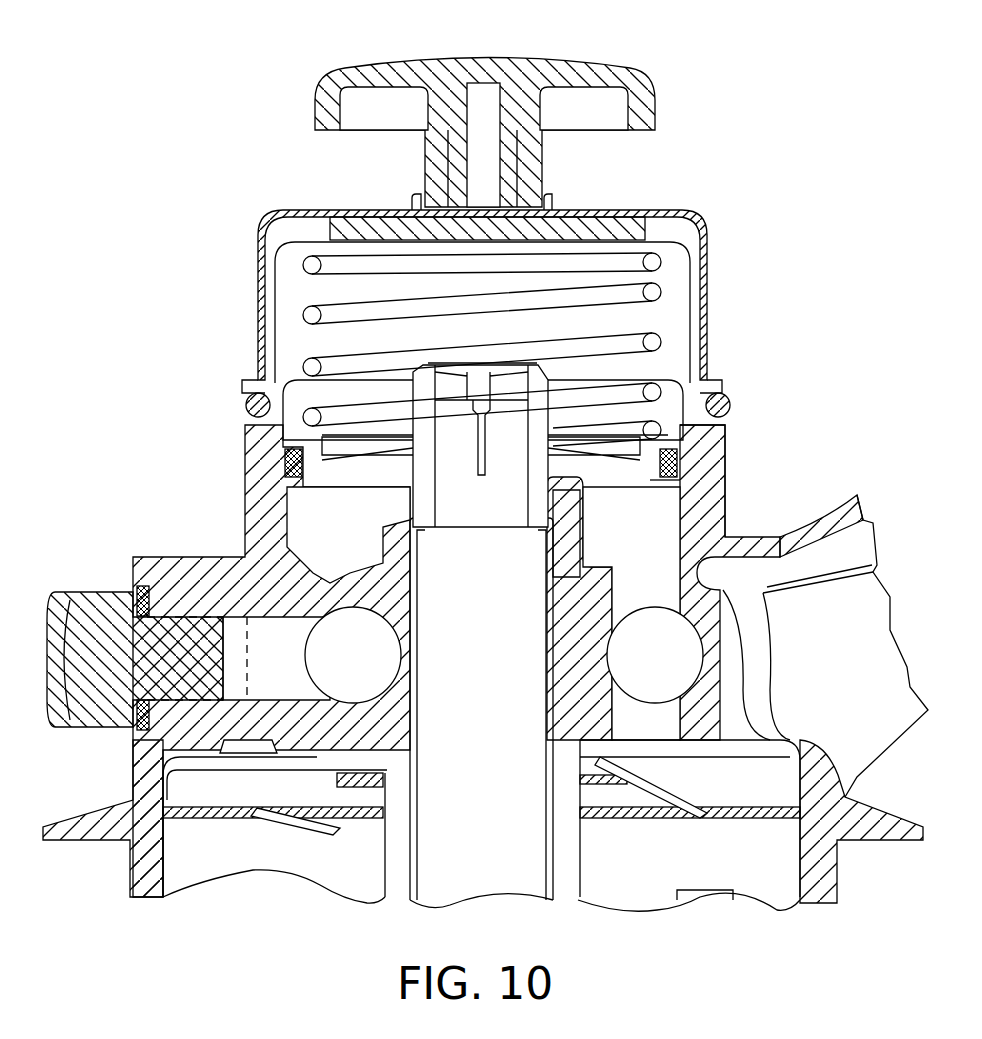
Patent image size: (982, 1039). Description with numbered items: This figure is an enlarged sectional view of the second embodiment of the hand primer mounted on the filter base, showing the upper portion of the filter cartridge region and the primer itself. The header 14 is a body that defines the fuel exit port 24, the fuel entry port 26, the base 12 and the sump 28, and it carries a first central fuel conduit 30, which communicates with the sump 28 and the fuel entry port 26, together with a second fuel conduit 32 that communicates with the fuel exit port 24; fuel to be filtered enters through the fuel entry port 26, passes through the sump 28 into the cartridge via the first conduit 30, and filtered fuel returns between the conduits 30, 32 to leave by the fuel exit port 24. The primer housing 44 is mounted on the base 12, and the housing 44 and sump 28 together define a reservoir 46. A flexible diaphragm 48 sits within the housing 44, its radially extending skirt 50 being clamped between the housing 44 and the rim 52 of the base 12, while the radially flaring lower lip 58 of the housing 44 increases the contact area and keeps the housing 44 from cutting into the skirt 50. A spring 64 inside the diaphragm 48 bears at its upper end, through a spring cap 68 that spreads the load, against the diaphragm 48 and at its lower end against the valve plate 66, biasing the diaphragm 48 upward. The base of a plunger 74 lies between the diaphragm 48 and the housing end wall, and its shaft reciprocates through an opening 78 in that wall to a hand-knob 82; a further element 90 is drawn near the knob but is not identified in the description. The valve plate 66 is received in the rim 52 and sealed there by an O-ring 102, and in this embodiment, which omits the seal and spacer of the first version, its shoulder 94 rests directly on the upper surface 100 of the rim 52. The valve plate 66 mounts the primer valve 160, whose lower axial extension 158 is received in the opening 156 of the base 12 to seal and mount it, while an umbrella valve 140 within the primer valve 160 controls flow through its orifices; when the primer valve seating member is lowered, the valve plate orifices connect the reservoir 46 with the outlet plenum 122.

The base 12 is at (503, 661).
The header 14 is at (800, 535).
The fuel exit port 24 is at (372, 665).
The fuel entry port 26 is at (674, 665).
The sump 28 is at (293, 525).
The first central fuel conduit 30 is at (417, 655).
The second fuel conduit 32 is at (380, 868).
The housing 44 is at (487, 279).
The reservoir 46 is at (693, 325).
The diaphragm 48 is at (705, 300).
The skirt 50 is at (722, 405).
The rim 52 is at (712, 445).
The lower lip 58 is at (260, 383).
The spring 64 is at (312, 315).
The valve plate 66 is at (283, 388).
The spring cap 68 is at (637, 215).
The plunger 74 is at (543, 155).
The opening 78 is at (427, 160).
The hand-knob 82 is at (397, 63).
The knob 90 is at (485, 106).
The shoulder 94 is at (712, 398).
The upper surface 100 is at (258, 405).
The O-ring 102 is at (290, 460).
The outlet plenum 122 is at (650, 545).
The umbrella valve 140 is at (478, 370).
The opening 156 is at (437, 503).
The lower axial extension 158 is at (400, 487).
The primer valve 160 is at (527, 514).